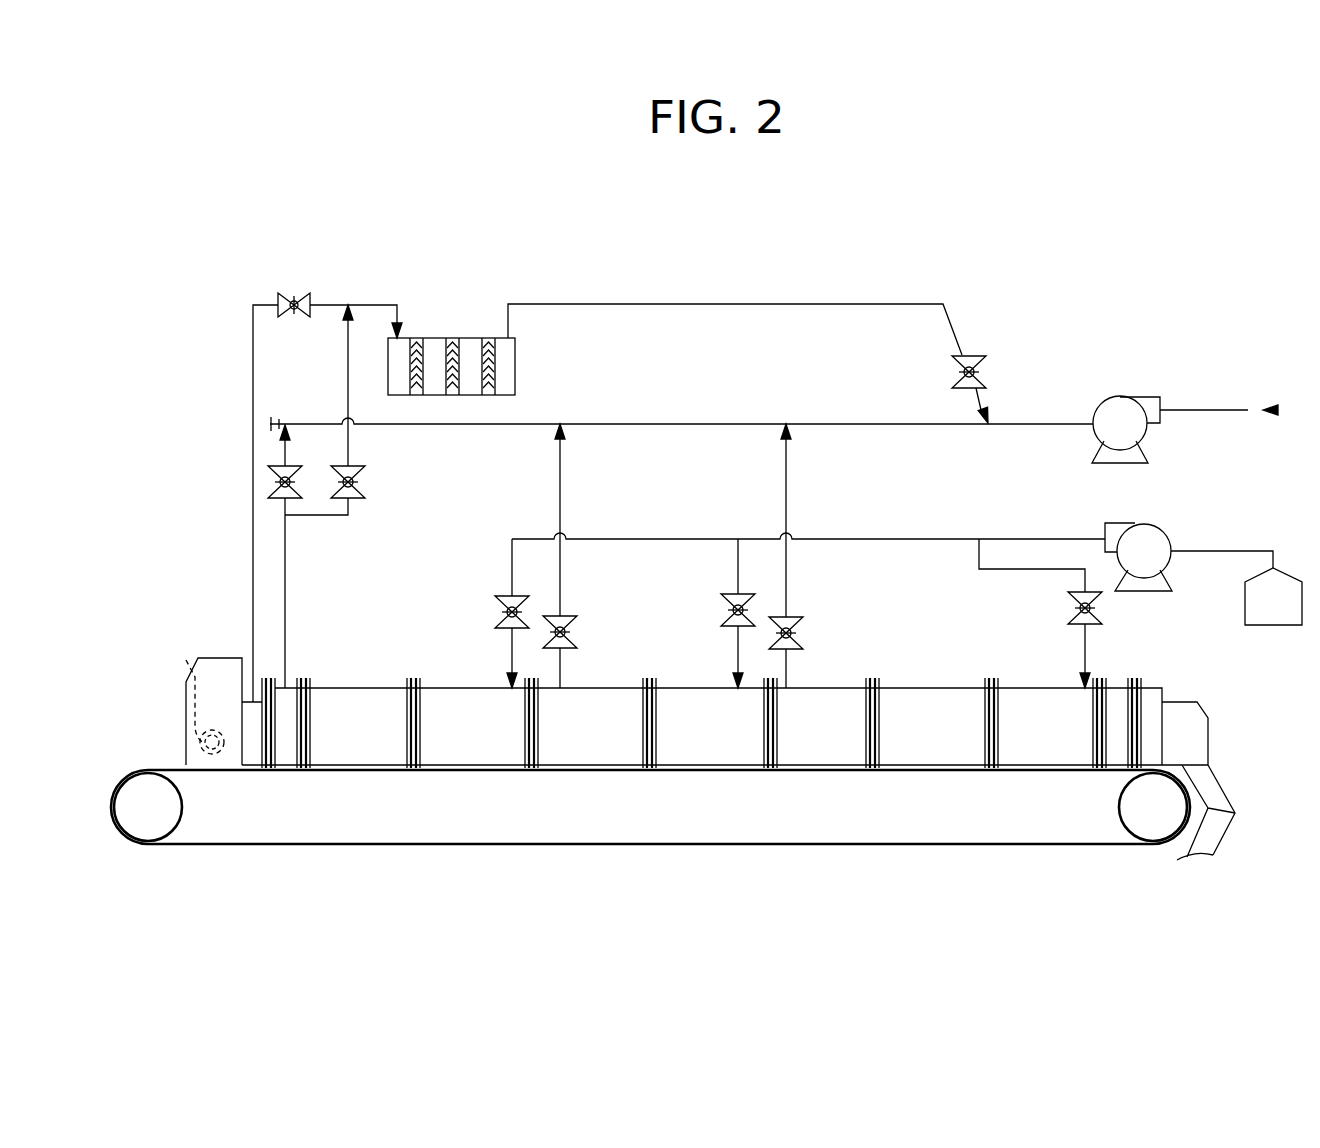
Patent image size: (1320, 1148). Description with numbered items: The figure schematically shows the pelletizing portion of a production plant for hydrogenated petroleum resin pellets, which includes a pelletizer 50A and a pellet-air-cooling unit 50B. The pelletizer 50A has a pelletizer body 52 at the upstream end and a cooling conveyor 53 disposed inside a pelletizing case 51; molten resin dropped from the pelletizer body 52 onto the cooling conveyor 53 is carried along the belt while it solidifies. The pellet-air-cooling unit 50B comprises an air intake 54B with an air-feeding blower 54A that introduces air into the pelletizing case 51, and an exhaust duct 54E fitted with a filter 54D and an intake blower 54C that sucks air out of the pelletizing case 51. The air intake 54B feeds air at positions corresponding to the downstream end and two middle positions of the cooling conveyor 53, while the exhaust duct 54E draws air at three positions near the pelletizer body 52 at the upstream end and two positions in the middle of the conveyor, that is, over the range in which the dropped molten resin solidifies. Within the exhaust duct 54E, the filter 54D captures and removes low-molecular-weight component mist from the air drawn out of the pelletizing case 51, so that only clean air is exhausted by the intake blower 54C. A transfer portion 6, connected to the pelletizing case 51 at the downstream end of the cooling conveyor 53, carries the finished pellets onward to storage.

The pelletizer 50A is at (140, 665).
The pellet-air-cooling unit 50B is at (1055, 317).
The pelletizing case 51 is at (928, 697).
The pelletizer body 52 is at (207, 698).
The cooling conveyor 53 is at (140, 771).
The transfer portion 6 is at (1227, 787).
The air-feeding blower 54A is at (1158, 530).
The air intake 54B is at (1052, 538).
The intake blower 54C is at (1118, 397).
The filter 54D is at (435, 337).
The exhaust duct 54E is at (1062, 423).